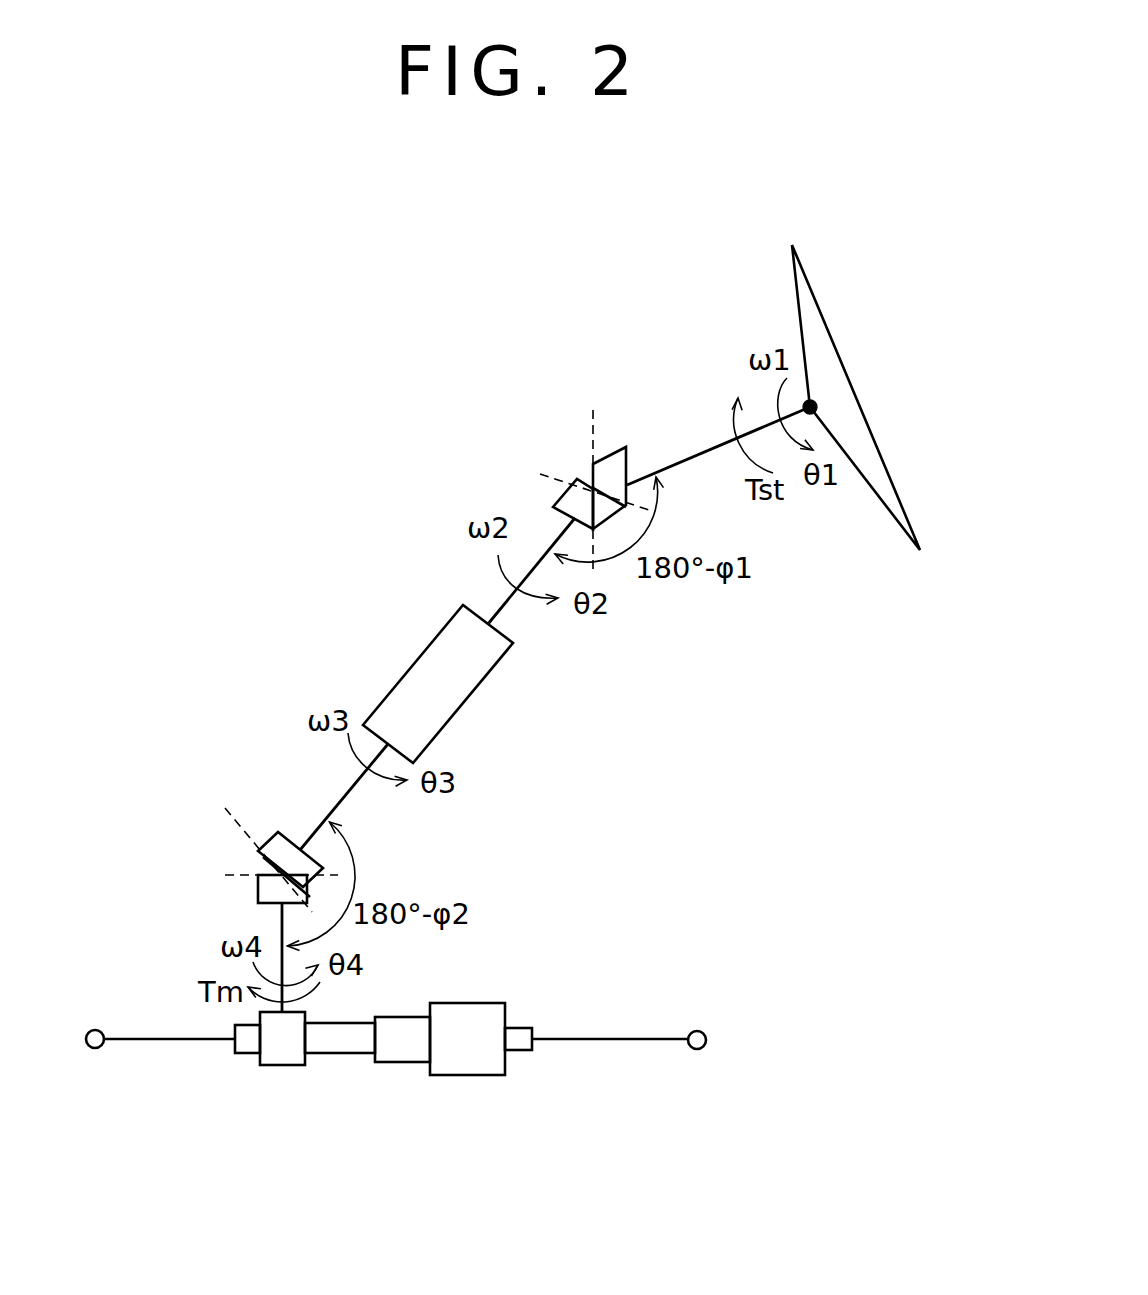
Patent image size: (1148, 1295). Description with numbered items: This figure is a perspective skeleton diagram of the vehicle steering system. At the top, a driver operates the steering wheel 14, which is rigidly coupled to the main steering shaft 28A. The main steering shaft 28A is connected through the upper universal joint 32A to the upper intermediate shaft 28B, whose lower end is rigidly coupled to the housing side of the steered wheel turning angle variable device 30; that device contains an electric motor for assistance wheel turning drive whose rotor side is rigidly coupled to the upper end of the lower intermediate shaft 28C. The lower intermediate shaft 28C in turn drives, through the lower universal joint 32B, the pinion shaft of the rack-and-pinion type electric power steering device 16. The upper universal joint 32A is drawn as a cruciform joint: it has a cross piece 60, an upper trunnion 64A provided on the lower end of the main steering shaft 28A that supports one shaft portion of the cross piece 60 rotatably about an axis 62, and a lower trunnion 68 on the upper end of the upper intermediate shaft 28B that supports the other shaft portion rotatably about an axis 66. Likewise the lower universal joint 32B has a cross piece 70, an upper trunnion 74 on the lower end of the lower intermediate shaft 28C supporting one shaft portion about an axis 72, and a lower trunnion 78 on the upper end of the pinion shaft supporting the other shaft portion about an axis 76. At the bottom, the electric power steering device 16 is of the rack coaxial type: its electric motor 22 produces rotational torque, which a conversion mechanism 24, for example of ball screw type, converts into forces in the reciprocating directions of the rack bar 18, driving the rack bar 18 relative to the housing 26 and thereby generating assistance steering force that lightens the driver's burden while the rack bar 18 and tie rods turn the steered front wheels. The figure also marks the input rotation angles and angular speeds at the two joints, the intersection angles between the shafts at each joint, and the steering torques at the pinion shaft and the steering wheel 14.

The steering wheel 14 is at (833, 340).
The electric power steering device 16 is at (302, 1087).
The rack bar 18 is at (597, 1038).
The electric motor 22 is at (463, 1076).
The conversion mechanism 24 is at (413, 1063).
The housing 26 is at (514, 1051).
The main steering shaft 28A is at (672, 467).
The upper intermediate shaft 28B is at (505, 607).
The lower intermediate shaft 28C is at (347, 802).
The steered wheel turning angle variable device 30 is at (413, 687).
The upper universal joint 32A is at (527, 407).
The lower universal joint 32B is at (243, 763).
The cross piece 60 is at (583, 478).
The axis 62 is at (593, 417).
The first yoke 64A is at (617, 451).
The axis 66 is at (668, 503).
The lower trunnion 68 is at (556, 499).
The cross piece 70 is at (277, 838).
The axis 72 is at (227, 810).
The upper trunnion 74 is at (323, 866).
The axis 76 is at (240, 870).
The lower trunnion 78 is at (258, 888).